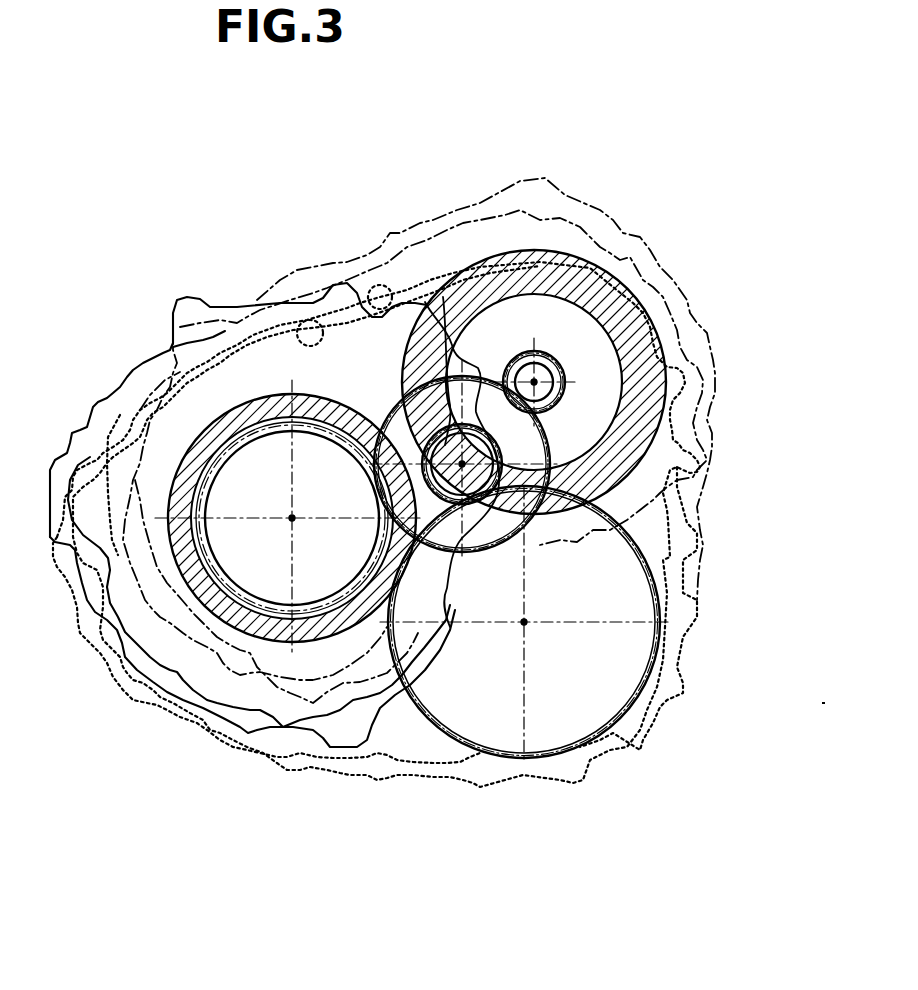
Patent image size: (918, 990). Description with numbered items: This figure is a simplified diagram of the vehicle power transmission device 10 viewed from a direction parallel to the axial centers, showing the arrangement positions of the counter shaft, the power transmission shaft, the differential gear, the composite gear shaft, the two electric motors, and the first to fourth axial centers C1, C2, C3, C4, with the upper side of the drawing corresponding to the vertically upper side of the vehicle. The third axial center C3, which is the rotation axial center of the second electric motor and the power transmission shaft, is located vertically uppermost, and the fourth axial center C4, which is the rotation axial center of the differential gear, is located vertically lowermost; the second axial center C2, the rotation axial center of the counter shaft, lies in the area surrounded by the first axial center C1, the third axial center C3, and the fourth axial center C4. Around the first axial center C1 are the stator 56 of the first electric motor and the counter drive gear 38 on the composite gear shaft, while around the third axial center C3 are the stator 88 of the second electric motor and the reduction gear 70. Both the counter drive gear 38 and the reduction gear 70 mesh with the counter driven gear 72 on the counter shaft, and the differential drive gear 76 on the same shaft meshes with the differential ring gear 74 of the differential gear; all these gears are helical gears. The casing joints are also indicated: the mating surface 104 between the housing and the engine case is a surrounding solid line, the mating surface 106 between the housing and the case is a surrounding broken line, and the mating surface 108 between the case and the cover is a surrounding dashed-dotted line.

The power transmission device 10 is at (661, 191).
The counter drive gear 38 is at (255, 430).
The stator 56 is at (262, 598).
The counter driven gear 72 is at (489, 378).
The differential drive gear 76 is at (470, 505).
The stator 88 is at (542, 250).
The reduction gear 70 is at (566, 388).
The differential ring gear 74 is at (645, 689).
The mating surface 104 is at (168, 682).
The mating surface 106 is at (328, 760).
The mating surface 108 is at (172, 600).
The first axial center C1 is at (292, 518).
The second axial center C2 is at (462, 464).
The third axial center C3 is at (534, 382).
The fourth axial center C4 is at (524, 622).